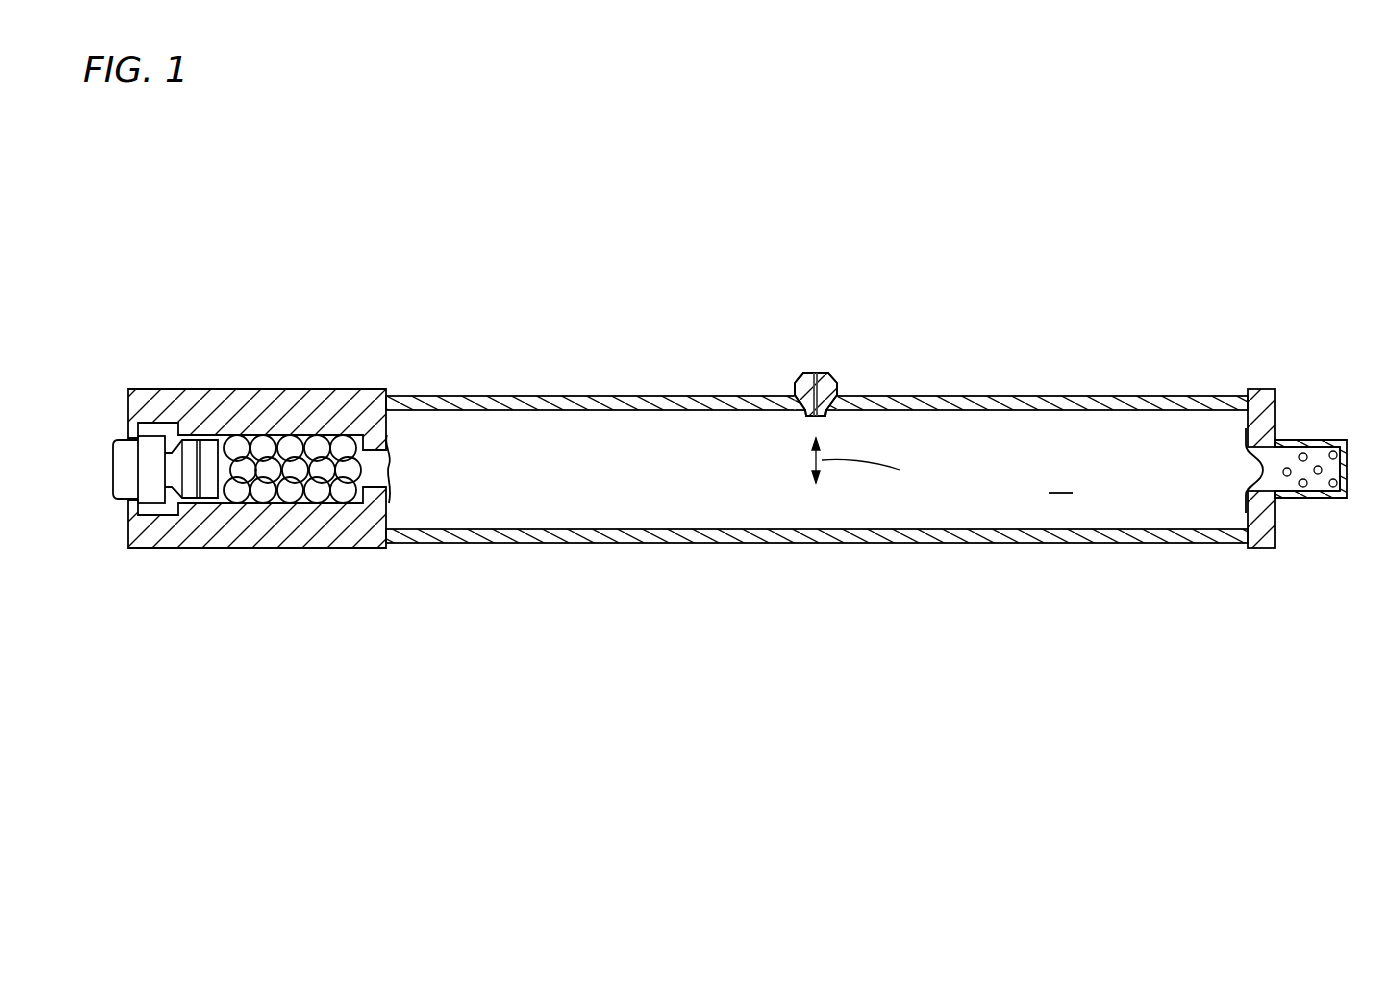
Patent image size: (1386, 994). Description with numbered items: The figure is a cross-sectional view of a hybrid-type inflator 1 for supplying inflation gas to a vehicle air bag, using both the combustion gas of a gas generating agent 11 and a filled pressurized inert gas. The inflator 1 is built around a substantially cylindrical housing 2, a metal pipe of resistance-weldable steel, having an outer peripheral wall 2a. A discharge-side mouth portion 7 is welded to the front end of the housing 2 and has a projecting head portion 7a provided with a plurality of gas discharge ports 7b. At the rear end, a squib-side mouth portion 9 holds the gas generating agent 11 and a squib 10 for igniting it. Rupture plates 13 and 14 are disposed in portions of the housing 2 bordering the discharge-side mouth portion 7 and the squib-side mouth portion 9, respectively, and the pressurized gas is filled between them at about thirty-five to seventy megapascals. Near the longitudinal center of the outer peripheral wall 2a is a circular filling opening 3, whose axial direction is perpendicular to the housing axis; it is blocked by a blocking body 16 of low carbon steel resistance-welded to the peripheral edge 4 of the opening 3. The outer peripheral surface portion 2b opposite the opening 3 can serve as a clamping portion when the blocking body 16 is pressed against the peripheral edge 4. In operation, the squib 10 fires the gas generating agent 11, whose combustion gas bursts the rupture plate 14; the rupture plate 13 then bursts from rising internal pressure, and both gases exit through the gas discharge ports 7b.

The inflator 1 is at (427, 300).
The housing 2 is at (548, 535).
The outer peripheral wall 2a is at (680, 404).
The outer peripheral surface portion 2b is at (797, 544).
The opening 3 is at (803, 412).
The peripheral edge 4 is at (840, 391).
The discharge-side mouth portion 7 is at (1277, 520).
The head portion 7a is at (1341, 446).
The gas discharge ports 7b is at (1322, 441).
The squib-side mouth portion 9 is at (291, 517).
The squib 10 is at (153, 492).
The gas generating agent 11 is at (290, 446).
The rupture plate 13 is at (1260, 467).
The rupture plate 14 is at (389, 468).
The blocking body 16 is at (800, 378).